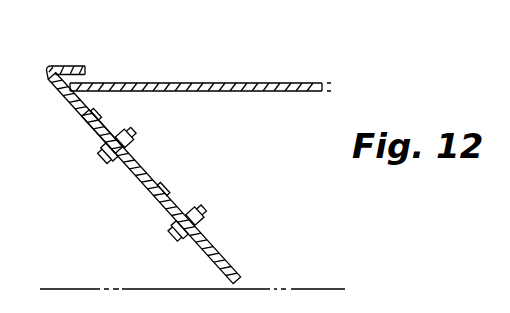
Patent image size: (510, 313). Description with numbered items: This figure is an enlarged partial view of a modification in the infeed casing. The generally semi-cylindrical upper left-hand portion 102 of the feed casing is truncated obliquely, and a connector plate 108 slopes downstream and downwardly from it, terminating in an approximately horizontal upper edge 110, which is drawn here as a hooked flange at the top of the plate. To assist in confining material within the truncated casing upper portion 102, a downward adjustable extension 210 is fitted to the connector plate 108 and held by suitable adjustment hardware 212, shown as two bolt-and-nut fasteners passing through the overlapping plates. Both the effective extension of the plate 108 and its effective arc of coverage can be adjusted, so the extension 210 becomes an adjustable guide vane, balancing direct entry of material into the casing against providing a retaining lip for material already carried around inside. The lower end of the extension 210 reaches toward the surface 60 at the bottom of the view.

The floor / ground surface 60 is at (301, 286).
The upper left-hand portion of the feed casing 102 is at (232, 83).
The connector plate 108 is at (90, 104).
The upper edge of connector plate 110 is at (72, 66).
The adjustable extension 210 is at (135, 186).
The adjustment hardware 212 is at (98, 155).